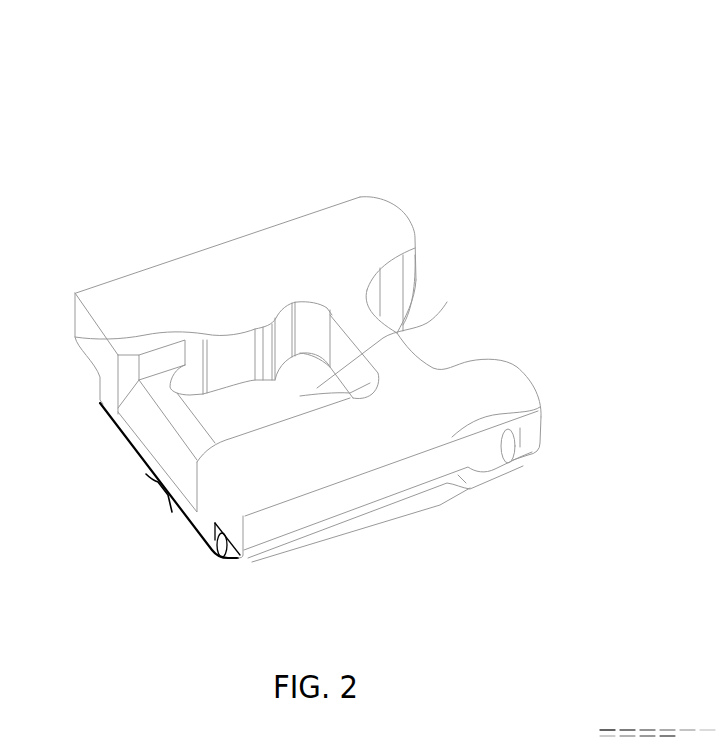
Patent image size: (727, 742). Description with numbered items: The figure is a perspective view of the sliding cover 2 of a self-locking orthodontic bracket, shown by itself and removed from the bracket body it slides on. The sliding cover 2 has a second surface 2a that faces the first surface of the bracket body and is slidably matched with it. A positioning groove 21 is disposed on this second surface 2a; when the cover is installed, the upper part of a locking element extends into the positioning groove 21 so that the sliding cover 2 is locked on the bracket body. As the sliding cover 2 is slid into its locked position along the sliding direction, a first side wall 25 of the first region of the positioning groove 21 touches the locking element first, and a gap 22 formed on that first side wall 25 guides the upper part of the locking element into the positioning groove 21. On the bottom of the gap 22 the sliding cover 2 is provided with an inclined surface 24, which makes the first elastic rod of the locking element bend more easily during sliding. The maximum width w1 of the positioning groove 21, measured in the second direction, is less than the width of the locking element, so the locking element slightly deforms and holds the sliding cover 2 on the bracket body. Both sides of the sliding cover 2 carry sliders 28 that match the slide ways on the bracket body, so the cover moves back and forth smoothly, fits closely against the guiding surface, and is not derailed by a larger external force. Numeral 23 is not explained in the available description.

The sliding cover 2 is at (248, 134).
The positioning groove 21 is at (393, 323).
The gap 22 is at (162, 390).
The upper plate front portion 23 is at (243, 350).
The inclined surface 24 is at (188, 490).
The first side wall 25 is at (200, 416).
The slider 28 is at (307, 515).
The second surface 2a is at (540, 407).
The maximum width of the positioning groove w1 is at (190, 345).